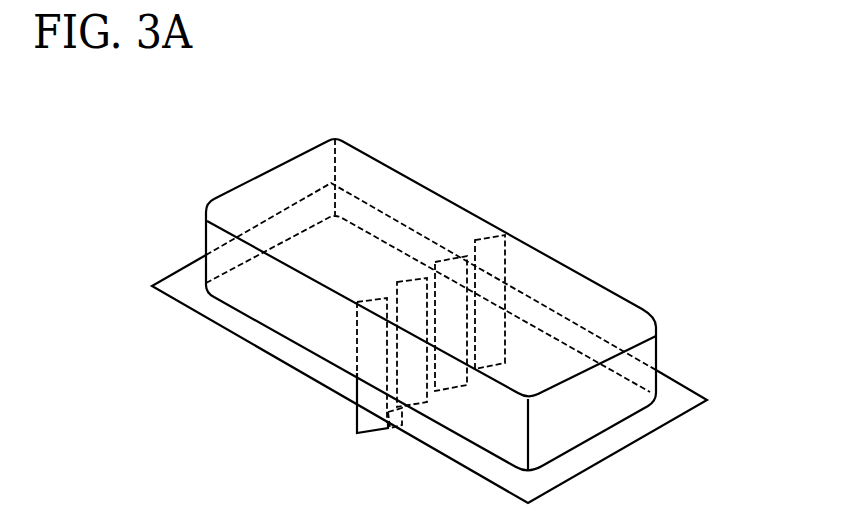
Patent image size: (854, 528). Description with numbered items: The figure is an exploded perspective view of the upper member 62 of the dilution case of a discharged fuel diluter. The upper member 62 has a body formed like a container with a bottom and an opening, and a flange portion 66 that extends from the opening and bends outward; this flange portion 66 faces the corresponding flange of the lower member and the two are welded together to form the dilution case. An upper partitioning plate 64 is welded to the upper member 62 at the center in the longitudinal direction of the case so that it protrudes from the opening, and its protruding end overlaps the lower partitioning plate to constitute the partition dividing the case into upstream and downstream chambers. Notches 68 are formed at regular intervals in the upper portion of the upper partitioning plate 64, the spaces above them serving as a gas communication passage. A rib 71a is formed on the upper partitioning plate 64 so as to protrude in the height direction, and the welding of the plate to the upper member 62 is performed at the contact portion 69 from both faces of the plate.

The upper member 62 is at (592, 237).
The upper partitioning plate 64 is at (363, 420).
The flange portion 66 is at (681, 396).
The notches 68 is at (424, 318).
The contact portion 69 is at (504, 275).
The rib 71a is at (474, 290).